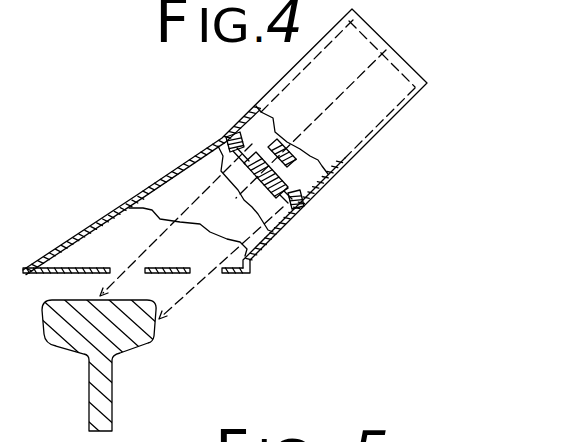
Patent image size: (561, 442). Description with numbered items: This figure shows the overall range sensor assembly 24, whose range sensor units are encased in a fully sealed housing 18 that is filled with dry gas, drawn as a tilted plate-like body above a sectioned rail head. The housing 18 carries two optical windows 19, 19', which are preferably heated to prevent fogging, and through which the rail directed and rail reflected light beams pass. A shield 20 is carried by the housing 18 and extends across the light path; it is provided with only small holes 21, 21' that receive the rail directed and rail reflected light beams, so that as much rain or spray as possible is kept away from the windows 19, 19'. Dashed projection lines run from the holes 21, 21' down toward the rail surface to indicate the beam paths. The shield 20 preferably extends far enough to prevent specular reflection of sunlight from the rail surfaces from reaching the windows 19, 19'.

The housing 18 is at (363, 162).
The optical window 19 is at (206, 142).
The optical window 19' is at (303, 226).
The shield 20 is at (182, 185).
The hole 21 is at (176, 220).
The hole 21' is at (221, 263).
The range sensor assembly 24 is at (423, 27).